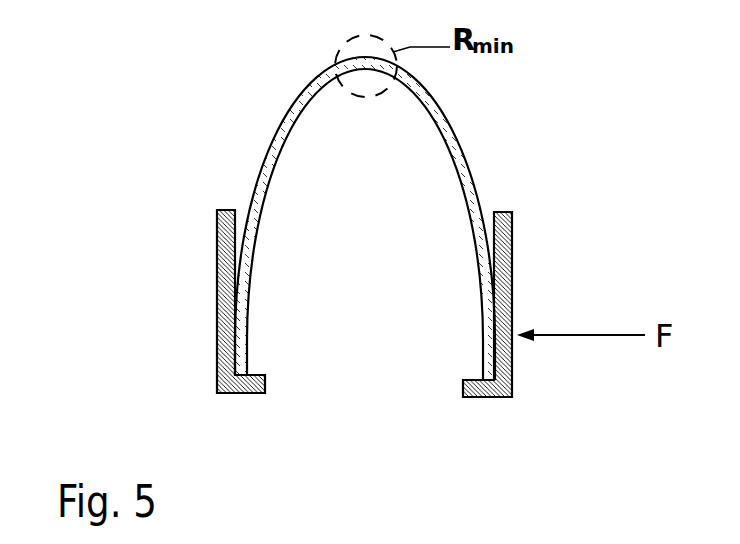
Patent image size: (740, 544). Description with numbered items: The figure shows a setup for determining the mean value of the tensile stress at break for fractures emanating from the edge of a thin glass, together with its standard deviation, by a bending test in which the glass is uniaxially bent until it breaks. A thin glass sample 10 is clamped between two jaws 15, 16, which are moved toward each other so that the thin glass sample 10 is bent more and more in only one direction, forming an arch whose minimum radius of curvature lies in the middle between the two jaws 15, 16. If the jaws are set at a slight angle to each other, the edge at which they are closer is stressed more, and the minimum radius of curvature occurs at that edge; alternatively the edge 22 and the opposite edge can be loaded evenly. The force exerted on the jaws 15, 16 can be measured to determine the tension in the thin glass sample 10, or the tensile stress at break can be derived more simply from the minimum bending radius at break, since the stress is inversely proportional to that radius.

The thin glass sample 10 is at (363, 218).
The edge 22 is at (280, 130).
The jaw 15 is at (215, 295).
The jaw 16 is at (512, 292).